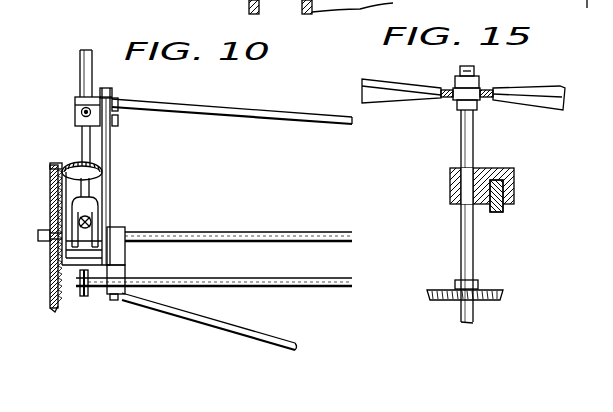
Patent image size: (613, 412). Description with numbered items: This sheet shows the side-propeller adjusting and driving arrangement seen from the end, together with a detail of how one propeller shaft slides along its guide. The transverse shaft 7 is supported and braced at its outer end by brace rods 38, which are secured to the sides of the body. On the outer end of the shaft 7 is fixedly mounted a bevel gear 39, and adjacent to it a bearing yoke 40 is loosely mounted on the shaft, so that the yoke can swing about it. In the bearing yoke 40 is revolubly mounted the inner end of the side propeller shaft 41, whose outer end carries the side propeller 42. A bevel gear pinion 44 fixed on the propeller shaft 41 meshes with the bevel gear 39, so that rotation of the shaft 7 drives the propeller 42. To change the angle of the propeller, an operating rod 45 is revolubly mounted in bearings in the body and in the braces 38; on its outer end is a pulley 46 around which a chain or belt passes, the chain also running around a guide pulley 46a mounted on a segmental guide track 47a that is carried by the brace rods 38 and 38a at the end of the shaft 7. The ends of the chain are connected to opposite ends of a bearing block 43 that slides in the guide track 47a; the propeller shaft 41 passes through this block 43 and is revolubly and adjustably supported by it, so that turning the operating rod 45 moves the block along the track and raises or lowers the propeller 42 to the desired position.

In FIG. 10, the shaft 7 is at (216, 238).
In FIG. 10, the brace rods 38 is at (255, 314).
In FIG. 10, the brace rod 38a is at (223, 111).
In FIG. 10, the bevel gear 39 is at (51, 308).
In FIG. 10, the bearing yoke 40 is at (95, 211).
In FIG. 10, the side propeller shaft 41 is at (80, 69).
In FIG. 15, the side propeller shaft 41 is at (480, 133).
In FIG. 15, the side propeller 42 is at (523, 93).
In FIG. 10, the bearing block 43 is at (76, 114).
In FIG. 15, the bearing block 43 is at (505, 168).
In FIG. 10, the bevel gear pinion 44 is at (63, 164).
In FIG. 15, the bevel gear pinion 44 is at (503, 294).
In FIG. 10, the operating rod 45 is at (175, 283).
In FIG. 10, the pulley 46 is at (85, 297).
In FIG. 10, the guide pulley 46a is at (76, 104).
In FIG. 10, the segmental guide track 47a is at (103, 143).
In FIG. 15, the segmental guide track 47a is at (497, 212).